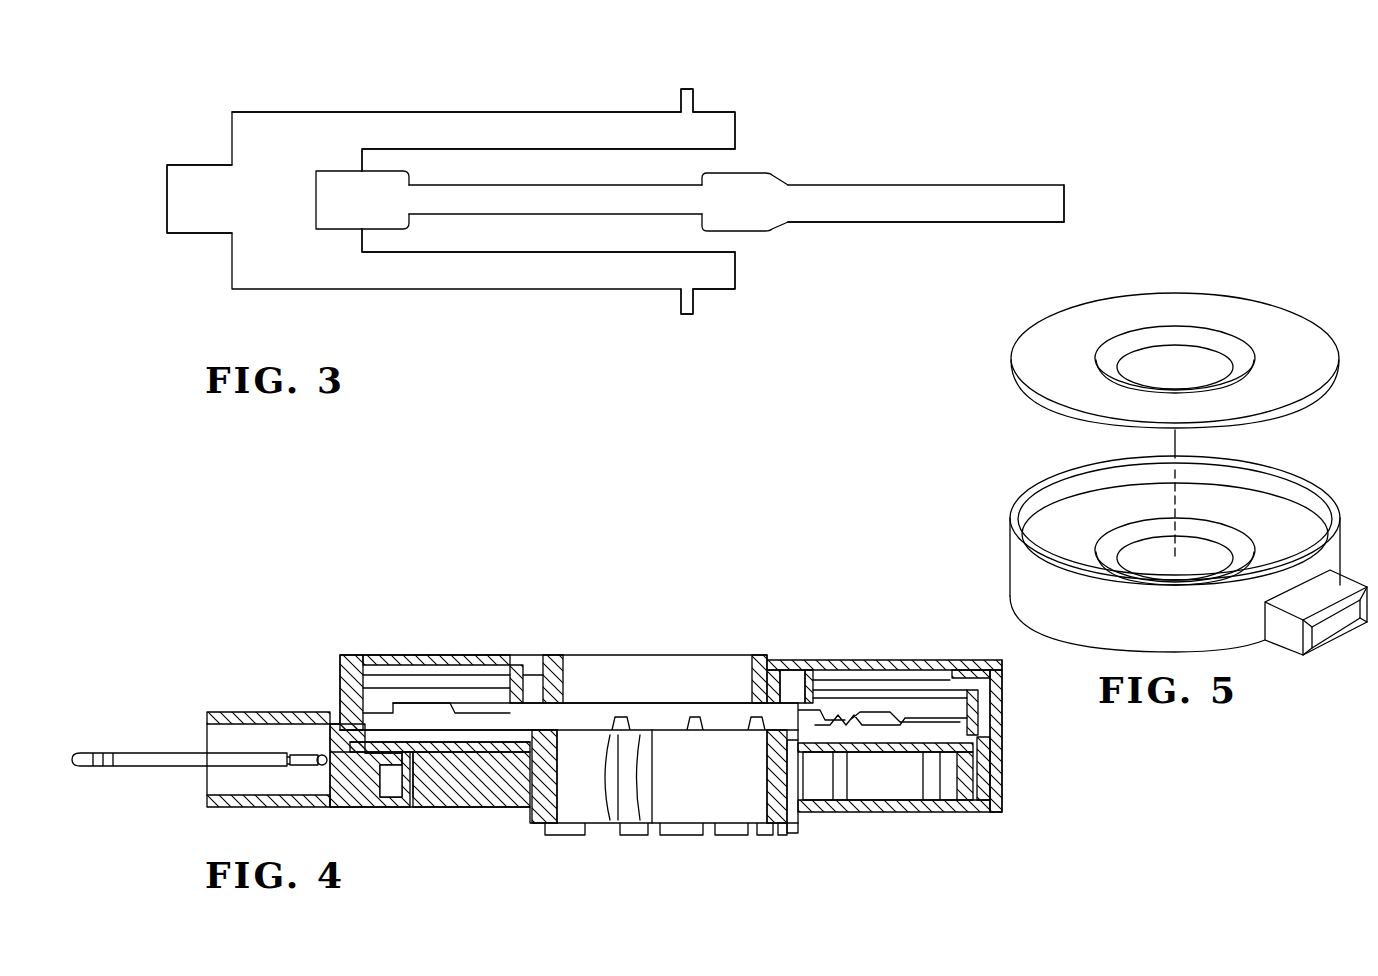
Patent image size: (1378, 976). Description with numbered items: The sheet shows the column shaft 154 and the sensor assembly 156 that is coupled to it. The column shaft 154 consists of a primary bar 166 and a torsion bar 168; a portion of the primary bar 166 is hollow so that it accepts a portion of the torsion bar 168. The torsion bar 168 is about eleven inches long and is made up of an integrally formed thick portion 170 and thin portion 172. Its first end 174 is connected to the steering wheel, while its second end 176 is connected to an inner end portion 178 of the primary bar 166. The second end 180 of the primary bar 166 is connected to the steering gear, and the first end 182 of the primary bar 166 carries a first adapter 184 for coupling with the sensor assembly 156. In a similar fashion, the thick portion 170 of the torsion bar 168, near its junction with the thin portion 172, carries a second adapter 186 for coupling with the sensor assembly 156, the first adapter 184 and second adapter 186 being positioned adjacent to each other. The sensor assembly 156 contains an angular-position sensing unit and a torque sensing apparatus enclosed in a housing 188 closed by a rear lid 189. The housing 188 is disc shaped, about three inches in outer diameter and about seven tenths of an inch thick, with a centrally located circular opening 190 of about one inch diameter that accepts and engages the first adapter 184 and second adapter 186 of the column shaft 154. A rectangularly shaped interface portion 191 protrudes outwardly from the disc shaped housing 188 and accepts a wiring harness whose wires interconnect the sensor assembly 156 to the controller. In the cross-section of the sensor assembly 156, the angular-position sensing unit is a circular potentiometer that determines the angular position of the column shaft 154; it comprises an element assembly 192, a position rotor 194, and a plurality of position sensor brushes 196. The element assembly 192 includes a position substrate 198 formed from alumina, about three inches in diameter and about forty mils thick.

In FIG. 3, the column shaft 154 is at (400, 108).
In FIG. 4, the sensor assembly 156 is at (780, 850).
In FIG. 3, the primary bar 166 is at (303, 111).
In FIG. 3, the torsion bar 168 is at (937, 185).
In FIG. 3, the thick portion 170 is at (967, 222).
In FIG. 3, the thin portion 172 is at (523, 207).
In FIG. 3, the first end 174 is at (1064, 200).
In FIG. 3, the second end 176 is at (315, 212).
In FIG. 3, the inner end portion 178 is at (362, 237).
In FIG. 3, the second end 180 is at (166, 200).
In FIG. 3, the first end 182 is at (707, 111).
In FIG. 3, the first adapter 184 is at (725, 112).
In FIG. 3, the second adapter 186 is at (747, 233).
In FIG. 4, the second adapter 186 is at (1002, 763).
In FIG. 5, the housing 188 is at (1018, 522).
In FIG. 5, the rear lid 189 is at (1280, 325).
In FIG. 4, the circular opening 190 is at (627, 837).
In FIG. 5, the circular opening 190 is at (1147, 530).
In FIG. 4, the interface portion 191 is at (253, 712).
In FIG. 5, the interface portion 191 is at (1310, 597).
In FIG. 4, the element assembly 192 is at (887, 753).
In FIG. 4, the position rotor 194 is at (690, 703).
In FIG. 4, the position sensor brushes 196 is at (457, 745).
In FIG. 4, the position substrate 198 is at (412, 752).